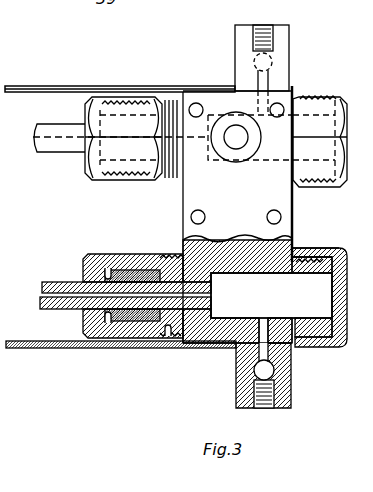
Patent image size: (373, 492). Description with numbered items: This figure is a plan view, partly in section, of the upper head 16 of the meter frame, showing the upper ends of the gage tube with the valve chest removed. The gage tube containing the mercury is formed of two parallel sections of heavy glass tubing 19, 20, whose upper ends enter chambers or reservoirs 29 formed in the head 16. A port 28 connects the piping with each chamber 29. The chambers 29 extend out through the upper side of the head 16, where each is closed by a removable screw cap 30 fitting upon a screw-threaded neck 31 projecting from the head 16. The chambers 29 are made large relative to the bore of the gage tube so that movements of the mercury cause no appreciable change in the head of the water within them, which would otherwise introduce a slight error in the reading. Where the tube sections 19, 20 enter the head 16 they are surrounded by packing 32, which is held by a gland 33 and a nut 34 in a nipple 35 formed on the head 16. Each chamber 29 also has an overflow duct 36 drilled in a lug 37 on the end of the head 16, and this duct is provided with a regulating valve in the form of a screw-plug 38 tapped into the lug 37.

The upper head 16 is at (162, 214).
The gage tube section 19 is at (50, 282).
The gage tube section 20 is at (48, 152).
The port 28 is at (236, 140).
The chamber 29 is at (271, 295).
The screw cap 30 is at (329, 249).
The screw-threaded neck 31 is at (323, 265).
The packing 32 is at (148, 278).
The gland 33 is at (115, 268).
The nut 34 is at (97, 332).
The nipple 35 is at (163, 332).
The overflow duct 36 is at (265, 98).
The lug 37 is at (233, 60).
The screw-plug 38 is at (272, 41).